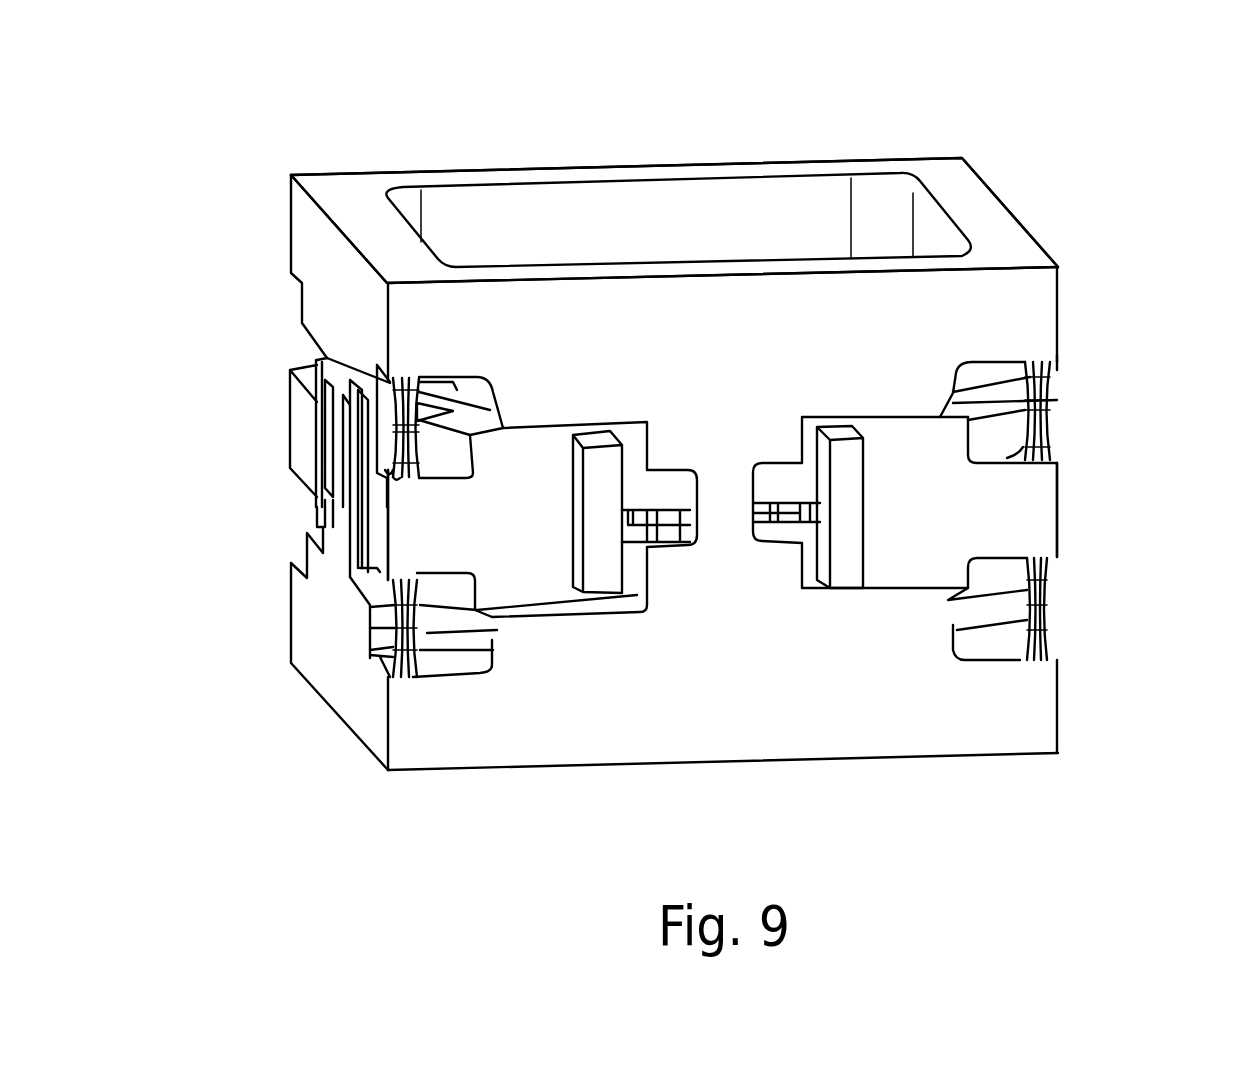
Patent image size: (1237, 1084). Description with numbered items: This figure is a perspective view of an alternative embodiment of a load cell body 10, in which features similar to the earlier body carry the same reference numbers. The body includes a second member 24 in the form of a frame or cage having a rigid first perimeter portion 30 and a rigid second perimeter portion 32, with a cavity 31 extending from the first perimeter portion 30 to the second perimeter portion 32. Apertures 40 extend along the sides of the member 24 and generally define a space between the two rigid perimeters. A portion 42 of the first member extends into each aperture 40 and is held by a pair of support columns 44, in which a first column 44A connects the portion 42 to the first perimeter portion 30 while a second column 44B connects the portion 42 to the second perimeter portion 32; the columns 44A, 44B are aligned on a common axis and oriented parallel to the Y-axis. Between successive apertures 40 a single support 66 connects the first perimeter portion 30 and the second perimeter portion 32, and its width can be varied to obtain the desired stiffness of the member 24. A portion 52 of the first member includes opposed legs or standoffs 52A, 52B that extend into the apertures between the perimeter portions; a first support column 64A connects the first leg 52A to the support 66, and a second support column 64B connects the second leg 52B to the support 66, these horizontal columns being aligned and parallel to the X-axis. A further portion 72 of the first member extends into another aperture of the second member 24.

The load cell body 10 is at (478, 226).
The second member 24 is at (700, 763).
The first perimeter portion 30 is at (1040, 243).
The cavity 31 is at (657, 206).
The second perimeter portion 32 is at (997, 760).
The apertures 40 is at (325, 357).
The portion 42 is at (380, 535).
The pair of support columns 44 is at (707, 592).
The first column 44A is at (348, 466).
The second column 44B is at (373, 650).
The portion 52 is at (774, 449).
The first leg 52A is at (848, 578).
The second leg 52B is at (603, 587).
The first support column 64A is at (787, 517).
The second support column 64B is at (653, 517).
The single support 66 is at (730, 467).
The portion 72 is at (298, 402).